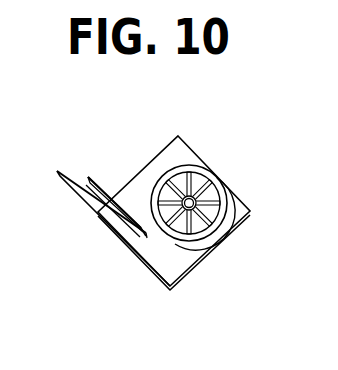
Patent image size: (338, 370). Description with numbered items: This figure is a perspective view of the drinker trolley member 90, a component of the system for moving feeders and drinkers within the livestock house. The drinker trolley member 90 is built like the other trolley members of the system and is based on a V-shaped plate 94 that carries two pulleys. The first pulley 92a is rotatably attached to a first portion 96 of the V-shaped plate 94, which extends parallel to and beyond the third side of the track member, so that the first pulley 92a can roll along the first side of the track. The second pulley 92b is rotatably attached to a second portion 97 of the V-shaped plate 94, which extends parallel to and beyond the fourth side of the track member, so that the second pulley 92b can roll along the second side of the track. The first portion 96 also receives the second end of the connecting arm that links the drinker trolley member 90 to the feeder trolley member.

The drinker trolley member 90 is at (96, 231).
The first pulley 92a is at (93, 184).
The second pulley 92b is at (203, 163).
The V-shaped plate 94 is at (187, 253).
The first portion 96 is at (138, 257).
The second portion 97 is at (226, 231).